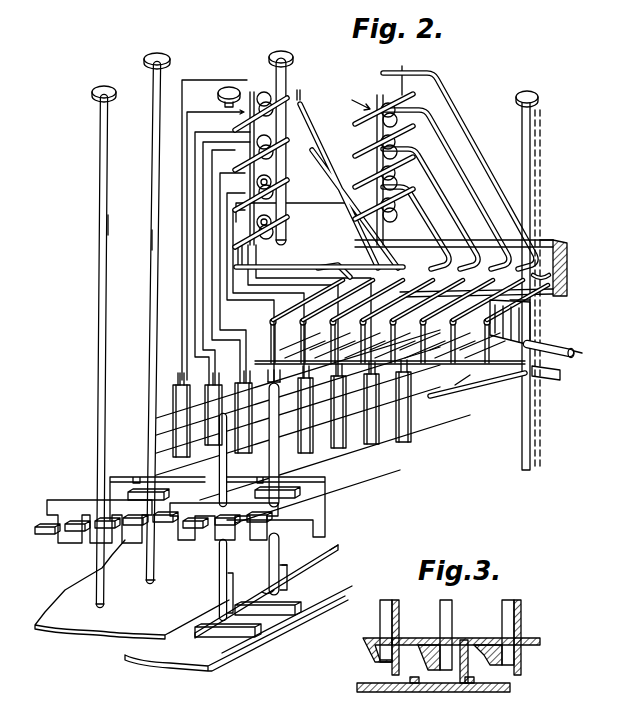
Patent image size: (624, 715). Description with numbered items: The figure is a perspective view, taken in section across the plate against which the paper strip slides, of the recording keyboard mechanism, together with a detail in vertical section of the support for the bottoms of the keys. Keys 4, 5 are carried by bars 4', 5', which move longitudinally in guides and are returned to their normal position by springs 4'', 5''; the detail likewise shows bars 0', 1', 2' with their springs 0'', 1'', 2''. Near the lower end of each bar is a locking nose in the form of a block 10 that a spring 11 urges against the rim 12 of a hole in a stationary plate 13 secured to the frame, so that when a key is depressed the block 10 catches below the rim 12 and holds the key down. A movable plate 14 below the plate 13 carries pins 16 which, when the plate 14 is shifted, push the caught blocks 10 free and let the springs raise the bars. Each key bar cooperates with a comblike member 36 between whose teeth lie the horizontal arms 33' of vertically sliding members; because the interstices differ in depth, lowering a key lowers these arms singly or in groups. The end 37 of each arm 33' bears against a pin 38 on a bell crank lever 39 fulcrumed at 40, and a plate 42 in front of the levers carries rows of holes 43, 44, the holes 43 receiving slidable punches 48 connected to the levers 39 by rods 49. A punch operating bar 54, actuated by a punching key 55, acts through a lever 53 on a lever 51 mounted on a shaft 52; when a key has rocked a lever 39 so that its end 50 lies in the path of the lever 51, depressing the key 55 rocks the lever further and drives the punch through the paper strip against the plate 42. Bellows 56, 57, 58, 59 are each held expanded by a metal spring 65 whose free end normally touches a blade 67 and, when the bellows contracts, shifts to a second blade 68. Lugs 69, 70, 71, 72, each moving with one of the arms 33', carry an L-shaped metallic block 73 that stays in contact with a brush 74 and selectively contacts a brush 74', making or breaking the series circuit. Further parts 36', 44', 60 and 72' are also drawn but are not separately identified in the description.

In FIG. 2, the key 4 is at (166, 335).
In FIG. 2, the bar 4' is at (170, 412).
In FIG. 2, the spring 4'' is at (228, 637).
In FIG. 2, the key 5 is at (219, 307).
In FIG. 2, the bar 5' is at (215, 408).
In FIG. 2, the spring 5'' is at (269, 607).
In FIG. 2, the locking nose 10 is at (300, 580).
In FIG. 3, the locking nose 10 is at (404, 640).
In FIG. 2, the spring 11 is at (284, 565).
In FIG. 3, the spring 11 is at (398, 616).
In FIG. 3, the rim 12 is at (466, 640).
In FIG. 2, the plate 13 is at (339, 547).
In FIG. 3, the plate 13 is at (530, 640).
In FIG. 2, the movable plate 14 is at (280, 630).
In FIG. 3, the movable plate 14 is at (440, 692).
In FIG. 2, the pins 16 is at (306, 606).
In FIG. 3, the pins 16 is at (412, 684).
In FIG. 3, the bar 0' is at (394, 625).
In FIG. 3, the bar 1' is at (453, 629).
In FIG. 3, the bar 2' is at (514, 627).
In FIG. 3, the spring 0'' is at (371, 651).
In FIG. 3, the spring 1'' is at (425, 658).
In FIG. 3, the spring 2'' is at (488, 659).
In FIG. 2, the horizontal arm 33' is at (310, 426).
In FIG. 2, the comblike member 36 is at (235, 500).
In FIG. 2, the front comb plate 36' is at (156, 511).
In FIG. 2, the end of horizontal arm 37 is at (492, 380).
In FIG. 2, the pin 38 is at (445, 342).
In FIG. 2, the bell crank lever 39 is at (544, 322).
In FIG. 2, the fulcrum 40 is at (470, 377).
In FIG. 2, the plate 42 is at (549, 241).
In FIG. 2, the holes 43 is at (567, 290).
In FIG. 2, the row of holes 44 is at (564, 241).
In FIG. 2, the hook wire 44' is at (433, 169).
In FIG. 2, the slidable punch 48 is at (568, 270).
In FIG. 2, the rod 49 is at (480, 336).
In FIG. 2, the end of arm 50 is at (532, 302).
In FIG. 2, the lever 51 is at (556, 347).
In FIG. 2, the shaft 52 is at (576, 352).
In FIG. 2, the lever 53 is at (561, 374).
In FIG. 2, the punch operating bar 54 is at (532, 186).
In FIG. 2, the punching key 55 is at (530, 92).
In FIG. 2, the bellows 56 is at (258, 92).
In FIG. 2, the bellows 57 is at (222, 150).
In FIG. 2, the bellows 58 is at (256, 184).
In FIG. 2, the bellows 59 is at (264, 232).
In FIG. 2, the wire 60 is at (233, 210).
In FIG. 2, the metal spring 65 is at (342, 155).
In FIG. 2, the metal blade 67 is at (248, 256).
In FIG. 2, the second blade 68 is at (228, 112).
In FIG. 2, the lug 69 is at (172, 423).
In FIG. 2, the lug 70 is at (205, 405).
In FIG. 2, the lug 71 is at (205, 430).
In FIG. 2, the lug 72 is at (266, 380).
In FIG. 2, the electrode 72' is at (237, 395).
In FIG. 2, the metallic block 73 is at (172, 388).
In FIG. 2, the brush 74 is at (169, 371).
In FIG. 2, the brush 74' is at (209, 406).